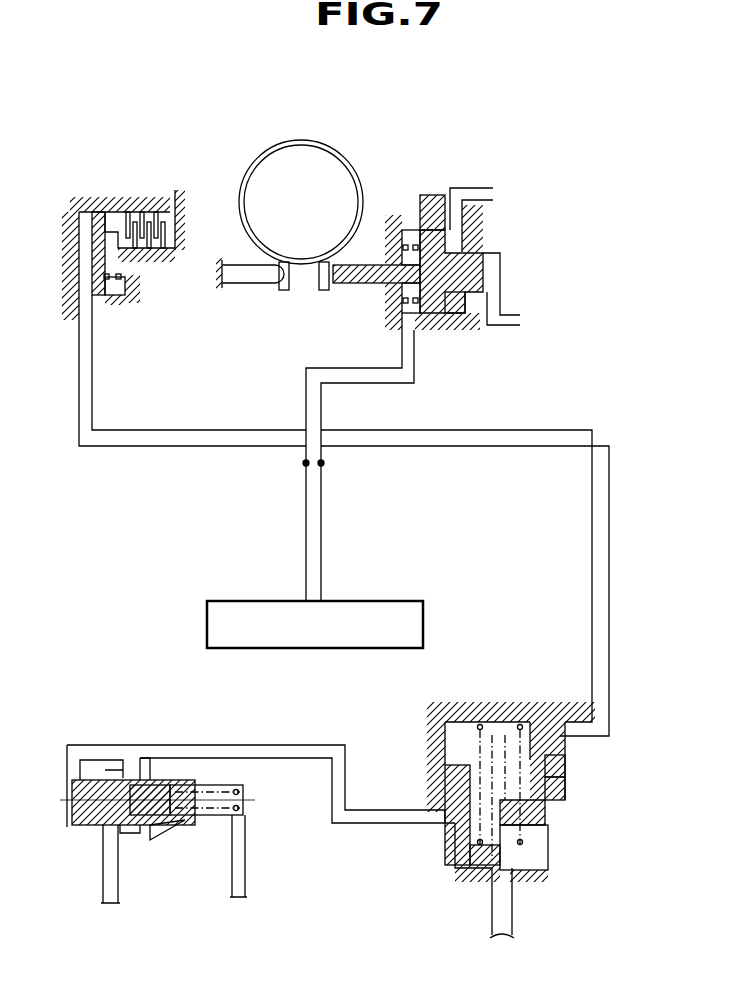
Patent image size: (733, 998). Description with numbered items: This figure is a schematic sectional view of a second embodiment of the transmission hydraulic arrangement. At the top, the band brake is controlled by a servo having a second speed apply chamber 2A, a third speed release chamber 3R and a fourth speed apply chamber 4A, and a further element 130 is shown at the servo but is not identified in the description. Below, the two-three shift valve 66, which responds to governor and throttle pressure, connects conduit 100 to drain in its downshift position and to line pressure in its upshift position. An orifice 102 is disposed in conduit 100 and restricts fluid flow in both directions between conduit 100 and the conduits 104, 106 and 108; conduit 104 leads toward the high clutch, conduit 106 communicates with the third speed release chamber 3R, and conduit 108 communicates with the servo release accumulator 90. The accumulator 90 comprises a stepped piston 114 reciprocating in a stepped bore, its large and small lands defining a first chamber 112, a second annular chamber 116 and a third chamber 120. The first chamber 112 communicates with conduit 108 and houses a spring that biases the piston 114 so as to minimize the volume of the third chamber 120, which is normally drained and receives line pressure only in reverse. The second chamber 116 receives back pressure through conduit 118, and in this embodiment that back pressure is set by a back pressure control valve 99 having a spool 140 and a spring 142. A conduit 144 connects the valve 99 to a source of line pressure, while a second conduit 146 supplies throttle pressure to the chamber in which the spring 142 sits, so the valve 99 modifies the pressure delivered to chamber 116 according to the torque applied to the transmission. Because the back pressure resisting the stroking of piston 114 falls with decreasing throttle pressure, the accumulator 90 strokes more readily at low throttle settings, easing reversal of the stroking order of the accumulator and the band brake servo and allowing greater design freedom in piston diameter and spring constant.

The third speed release chamber 3R is at (413, 235).
The second speed apply chamber 2A is at (460, 228).
The fourth speed apply chamber 4A is at (493, 277).
The seal 130 is at (456, 302).
The conduit 106 is at (345, 368).
The conduit 104 is at (185, 448).
The conduit 108 is at (612, 478).
The conduit 100 is at (306, 490).
The orifice 102 is at (322, 463).
The 2-3 shift valve 66 is at (362, 601).
The servo release accumulator 90 is at (440, 853).
The first chamber 112 is at (490, 730).
The second annular chamber 116 is at (560, 762).
The piston 114 is at (565, 790).
The third chamber 120 is at (540, 842).
The conduit 118 is at (420, 810).
The back pressure control valve 99 is at (90, 826).
The spool 140 is at (140, 806).
The spring 142 is at (242, 820).
The conduit 144 is at (100, 890).
The second conduit 146 is at (232, 885).